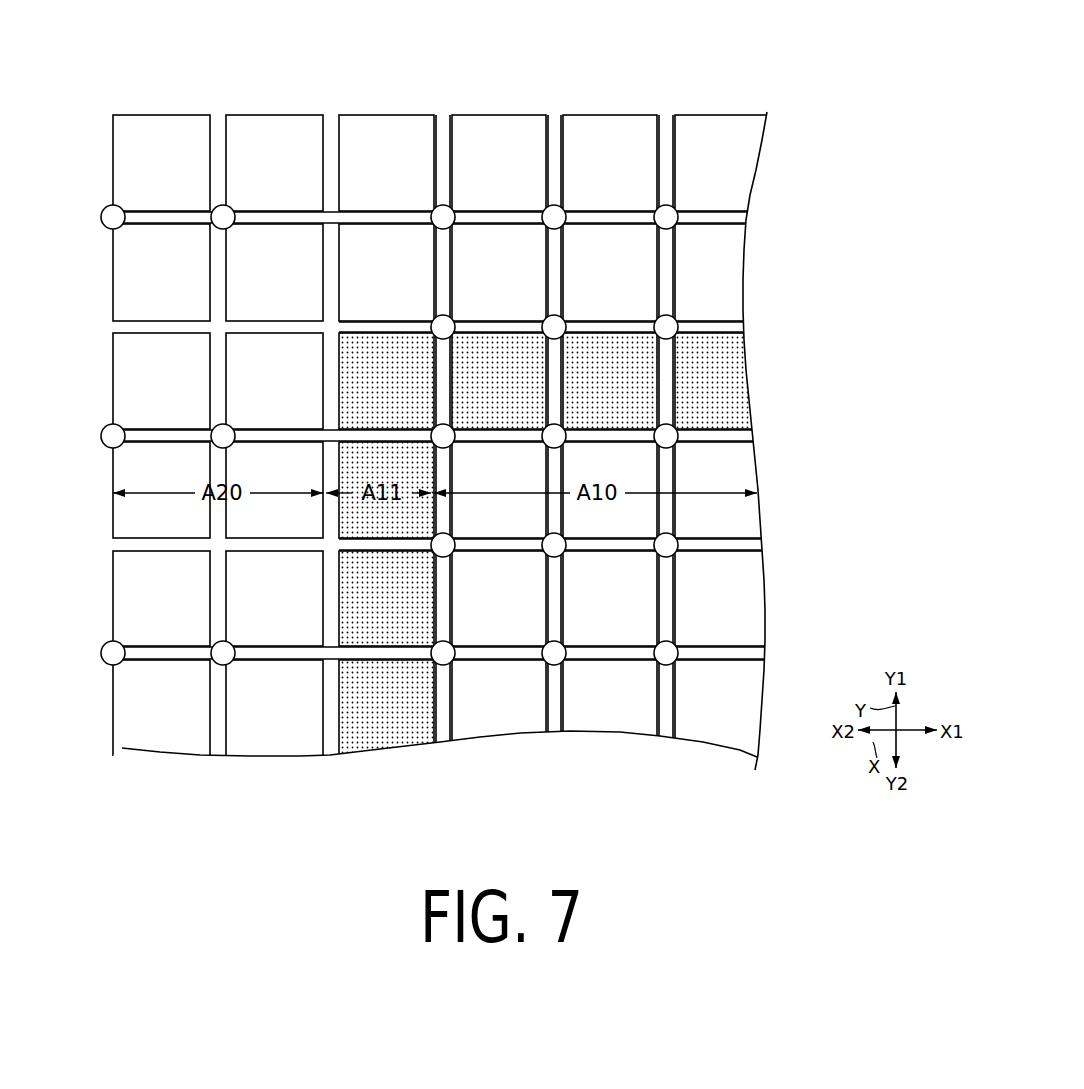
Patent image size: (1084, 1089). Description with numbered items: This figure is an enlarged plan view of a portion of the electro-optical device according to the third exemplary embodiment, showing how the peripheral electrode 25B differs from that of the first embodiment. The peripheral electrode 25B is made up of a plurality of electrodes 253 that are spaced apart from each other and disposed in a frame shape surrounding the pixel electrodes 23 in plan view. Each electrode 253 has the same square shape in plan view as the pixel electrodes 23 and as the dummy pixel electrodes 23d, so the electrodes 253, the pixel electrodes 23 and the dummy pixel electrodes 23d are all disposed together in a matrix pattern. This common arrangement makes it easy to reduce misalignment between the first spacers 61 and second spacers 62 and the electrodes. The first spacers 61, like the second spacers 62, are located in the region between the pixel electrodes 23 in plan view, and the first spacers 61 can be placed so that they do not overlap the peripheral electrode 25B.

The peripheral electrode 25B is at (694, 111).
The electrode 253 is at (163, 277).
The first spacer 61 is at (104, 212).
The second spacer 62 is at (613, 325).
The pixel electrode 23 is at (618, 608).
The dummy pixel electrode 23d is at (615, 382).